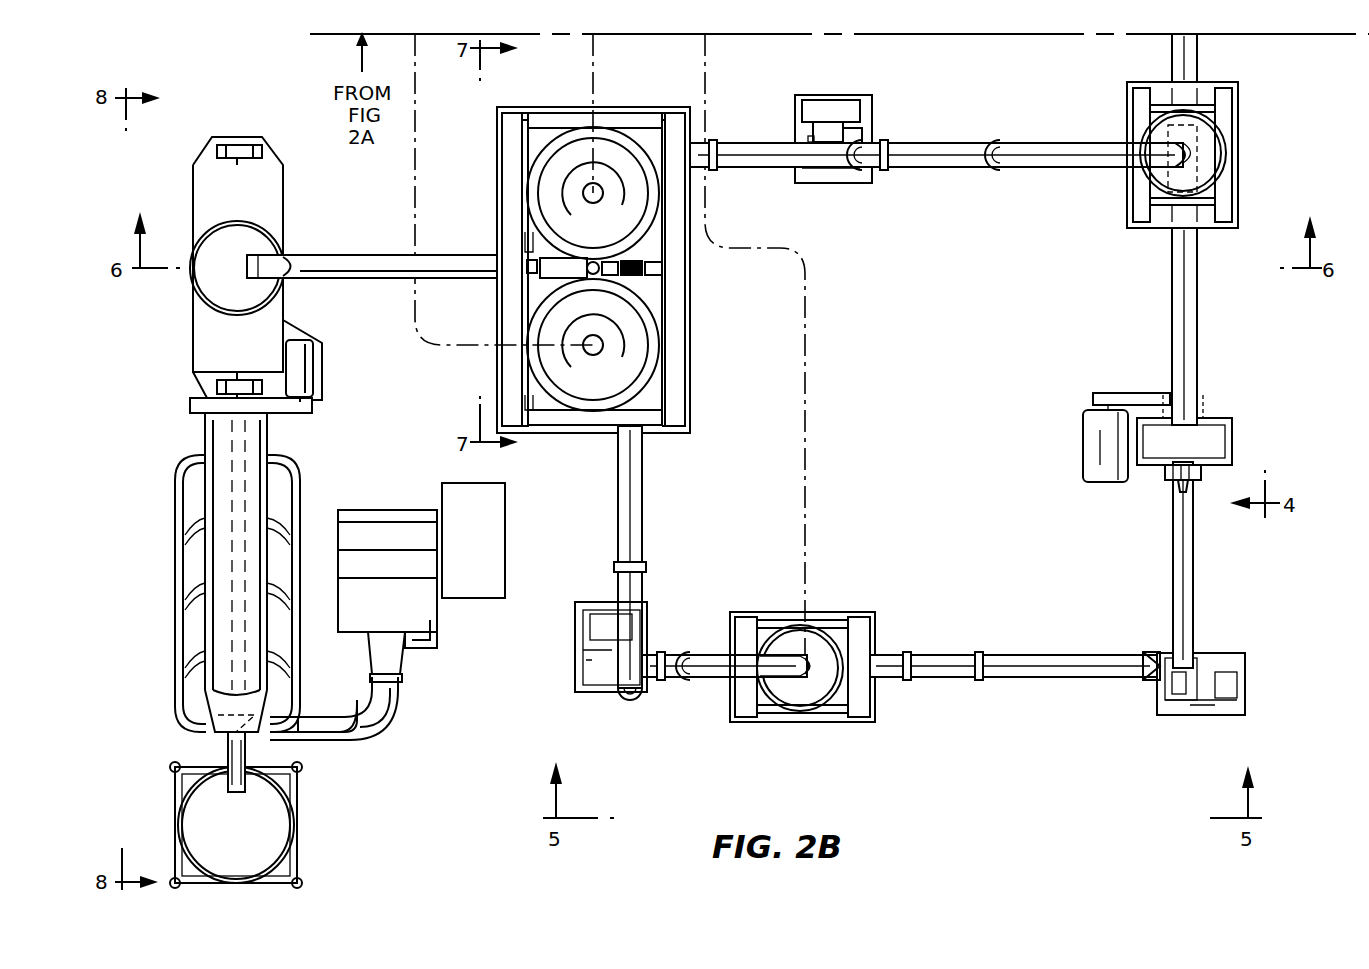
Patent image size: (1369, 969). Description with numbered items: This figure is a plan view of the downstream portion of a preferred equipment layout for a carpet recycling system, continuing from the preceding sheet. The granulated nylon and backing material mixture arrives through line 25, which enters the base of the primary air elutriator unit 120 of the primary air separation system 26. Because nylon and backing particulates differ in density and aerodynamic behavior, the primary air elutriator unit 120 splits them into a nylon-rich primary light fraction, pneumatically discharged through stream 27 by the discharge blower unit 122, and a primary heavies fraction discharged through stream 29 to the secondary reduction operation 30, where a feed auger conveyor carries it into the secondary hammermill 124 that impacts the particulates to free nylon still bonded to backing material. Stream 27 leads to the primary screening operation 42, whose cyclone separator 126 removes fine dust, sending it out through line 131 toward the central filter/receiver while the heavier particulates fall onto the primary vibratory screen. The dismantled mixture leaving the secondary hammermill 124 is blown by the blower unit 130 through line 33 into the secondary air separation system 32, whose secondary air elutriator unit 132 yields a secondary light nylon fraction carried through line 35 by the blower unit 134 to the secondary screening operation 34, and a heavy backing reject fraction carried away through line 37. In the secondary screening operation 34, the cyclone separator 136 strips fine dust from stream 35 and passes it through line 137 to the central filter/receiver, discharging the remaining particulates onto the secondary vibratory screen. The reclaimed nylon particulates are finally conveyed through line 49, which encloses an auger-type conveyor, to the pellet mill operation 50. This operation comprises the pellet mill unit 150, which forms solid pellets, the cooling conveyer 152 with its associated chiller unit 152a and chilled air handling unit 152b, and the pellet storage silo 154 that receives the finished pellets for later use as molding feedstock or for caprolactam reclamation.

The line 25 is at (1203, 58).
The primary air separation system 26 is at (1216, 153).
The stream 27 is at (937, 180).
The stream 29 is at (1147, 326).
The secondary reduction operation 30 is at (1180, 428).
The secondary air separation system 32 is at (815, 638).
The line 33 is at (1021, 639).
The secondary screening operation 34 is at (706, 269).
The line 35 is at (711, 582).
The line 37 is at (778, 351).
The primary screening operation 42 is at (565, 270).
The line 49 is at (372, 292).
The pellet mill operation 50 is at (302, 419).
The primary air elutriator unit 120 is at (1215, 153).
The discharge blower unit 122 is at (1027, 223).
The secondary hammermill 124 is at (1160, 565).
The cyclone separator 126 is at (593, 193).
The blower unit 130 is at (1212, 662).
The line 131 is at (623, 113).
The secondary air elutriator unit 132 is at (820, 693).
The blower unit 134 is at (604, 670).
The cyclone separator 136 is at (593, 345).
The line 137 is at (471, 189).
The pellet mill unit 150 is at (256, 275).
The cooling conveyer 152 is at (290, 576).
The chiller unit 152a is at (473, 540).
The chilled air handling unit 152b is at (387, 579).
The pellet storage silo 154 is at (236, 810).